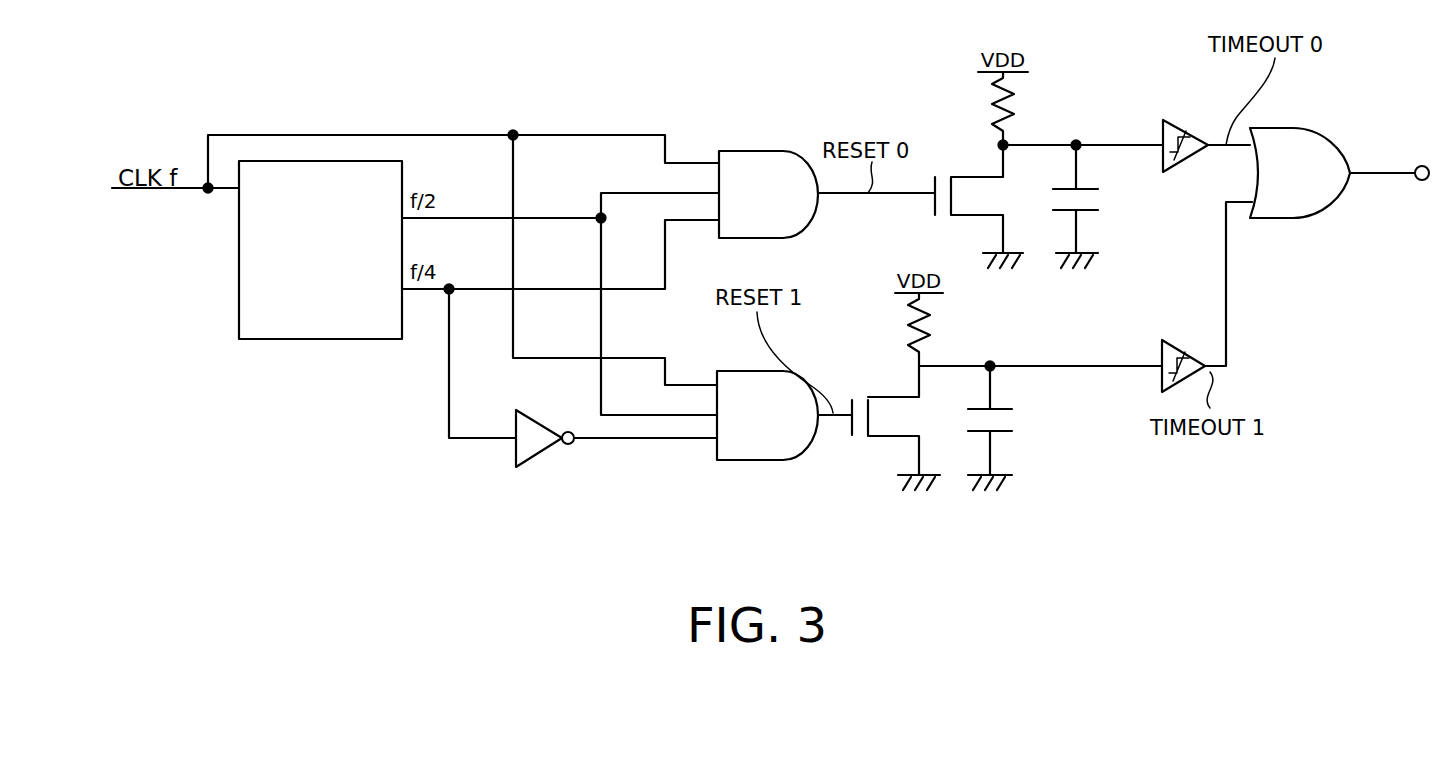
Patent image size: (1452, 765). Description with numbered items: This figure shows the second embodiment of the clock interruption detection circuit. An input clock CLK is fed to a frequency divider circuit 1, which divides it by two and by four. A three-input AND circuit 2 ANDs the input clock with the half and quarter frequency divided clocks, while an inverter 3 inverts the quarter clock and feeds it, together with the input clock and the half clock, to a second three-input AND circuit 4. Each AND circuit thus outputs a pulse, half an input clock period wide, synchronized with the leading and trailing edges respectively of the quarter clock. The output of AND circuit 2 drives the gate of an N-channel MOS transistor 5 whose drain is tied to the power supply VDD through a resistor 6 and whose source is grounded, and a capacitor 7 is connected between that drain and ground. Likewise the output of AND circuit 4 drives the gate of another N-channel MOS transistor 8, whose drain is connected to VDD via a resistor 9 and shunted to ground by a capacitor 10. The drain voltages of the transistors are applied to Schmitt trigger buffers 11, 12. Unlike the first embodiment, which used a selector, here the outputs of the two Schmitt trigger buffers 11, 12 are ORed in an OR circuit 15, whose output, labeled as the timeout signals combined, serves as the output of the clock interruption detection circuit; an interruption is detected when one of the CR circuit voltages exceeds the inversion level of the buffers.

The frequency divider circuit 1 is at (349, 340).
The three-input AND circuit 2 is at (762, 151).
The inverter 3 is at (546, 450).
The second three-input AND circuit 4 is at (763, 461).
The N-channel MOS transistor 5 is at (965, 177).
The resistor 6 is at (1012, 92).
The capacitor 7 is at (1092, 199).
The N-channel MOS transistor 8 is at (858, 398).
The resistor 9 is at (912, 304).
The capacitor 10 is at (1005, 421).
The Schmitt trigger buffer 11 is at (1183, 126).
The Schmitt trigger buffer 12 is at (1183, 342).
The OR circuit 15 is at (1290, 219).